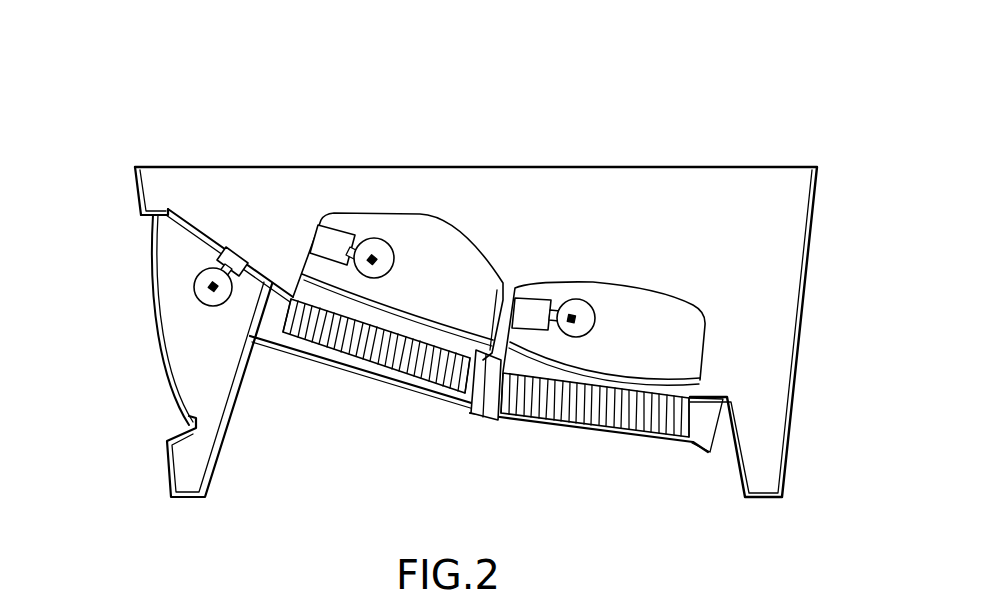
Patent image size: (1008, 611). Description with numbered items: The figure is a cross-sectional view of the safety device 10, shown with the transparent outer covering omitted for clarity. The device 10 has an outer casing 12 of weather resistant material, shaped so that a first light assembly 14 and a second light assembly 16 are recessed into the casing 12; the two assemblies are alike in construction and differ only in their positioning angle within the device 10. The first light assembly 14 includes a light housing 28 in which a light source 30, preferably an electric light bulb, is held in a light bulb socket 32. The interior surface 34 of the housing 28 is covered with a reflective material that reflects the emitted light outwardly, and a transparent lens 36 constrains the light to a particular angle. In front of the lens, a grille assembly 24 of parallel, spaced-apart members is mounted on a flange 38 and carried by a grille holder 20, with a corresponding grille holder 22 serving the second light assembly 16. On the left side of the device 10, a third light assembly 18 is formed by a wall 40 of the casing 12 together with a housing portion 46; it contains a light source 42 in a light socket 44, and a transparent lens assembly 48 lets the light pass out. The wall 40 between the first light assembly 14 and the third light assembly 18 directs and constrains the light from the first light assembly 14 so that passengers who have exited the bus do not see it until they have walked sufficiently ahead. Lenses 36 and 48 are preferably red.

The safety device 10 is at (712, 148).
The outer casing 12 is at (793, 420).
The first light assembly 14 is at (412, 243).
The second light assembly 16 is at (600, 280).
The third light assembly 18 is at (182, 364).
The grille holder 20 is at (263, 330).
The grille holder 22 is at (713, 445).
The grille assembly 24 is at (366, 356).
The light housing 28 is at (382, 223).
The light source 30 is at (373, 278).
The light bulb socket 32 is at (320, 240).
The interior surface 34 is at (450, 248).
The transparent lens 36 is at (673, 378).
The flange 38 is at (445, 413).
The wall 40 is at (232, 430).
The light source 42 is at (197, 290).
The light socket 44 is at (230, 248).
The housing portion 46 is at (180, 210).
The transparent lens assembly 48 is at (150, 318).